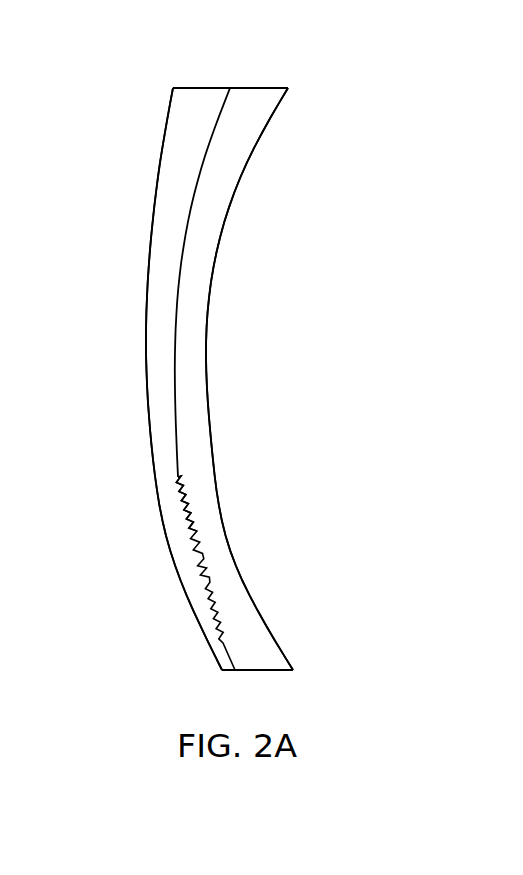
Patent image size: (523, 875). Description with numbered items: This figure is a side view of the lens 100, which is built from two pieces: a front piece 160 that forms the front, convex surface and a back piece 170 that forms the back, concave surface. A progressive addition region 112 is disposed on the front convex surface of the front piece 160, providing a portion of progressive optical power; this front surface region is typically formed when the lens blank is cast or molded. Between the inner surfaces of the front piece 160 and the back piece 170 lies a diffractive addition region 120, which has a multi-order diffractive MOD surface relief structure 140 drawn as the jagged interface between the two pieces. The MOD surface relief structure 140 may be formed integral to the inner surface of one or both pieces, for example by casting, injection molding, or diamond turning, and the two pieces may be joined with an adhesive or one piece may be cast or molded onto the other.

The lens 100 is at (100, 71).
The front piece 160 is at (203, 98).
The back piece 170 is at (258, 98).
The MOD surface relief structure 140 is at (187, 505).
The diffractive addition region 120 is at (206, 557).
The progressive addition region 112 is at (188, 603).